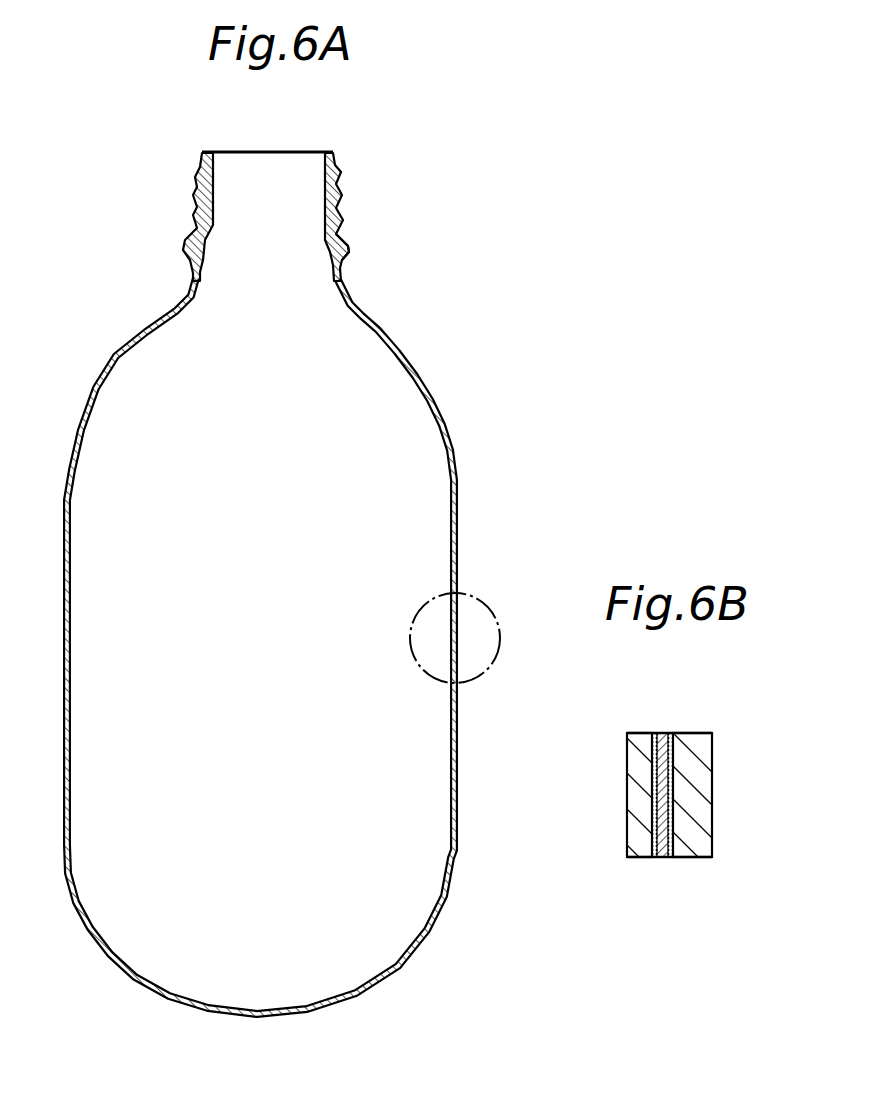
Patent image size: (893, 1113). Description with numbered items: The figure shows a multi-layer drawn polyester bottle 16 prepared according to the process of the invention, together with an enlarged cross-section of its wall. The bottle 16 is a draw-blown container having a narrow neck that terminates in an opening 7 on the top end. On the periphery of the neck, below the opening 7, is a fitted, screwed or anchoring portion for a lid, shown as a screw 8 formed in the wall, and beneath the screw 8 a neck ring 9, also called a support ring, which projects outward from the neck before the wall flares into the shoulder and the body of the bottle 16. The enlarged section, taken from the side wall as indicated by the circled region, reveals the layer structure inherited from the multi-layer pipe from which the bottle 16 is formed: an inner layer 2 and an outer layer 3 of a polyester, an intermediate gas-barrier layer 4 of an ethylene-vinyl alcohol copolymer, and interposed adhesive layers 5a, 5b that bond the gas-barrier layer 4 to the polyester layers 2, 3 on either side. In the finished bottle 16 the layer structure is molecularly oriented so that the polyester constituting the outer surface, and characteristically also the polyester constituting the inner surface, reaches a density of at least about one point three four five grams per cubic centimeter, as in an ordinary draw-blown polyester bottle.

In FIG. 6A, the multi-layer drawn polyester bottle 16 is at (468, 432).
In FIG. 6A, the opening 7 is at (331, 152).
In FIG. 6A, the screw 8 is at (341, 173).
In FIG. 6A, the neck ring 9 is at (346, 248).
In FIG. 6B, the inner layer 2 is at (637, 837).
In FIG. 6B, the outer layer 3 is at (702, 835).
In FIG. 6B, the intermediate gas-barrier layer 4 is at (662, 733).
In FIG. 6B, the adhesive layer 5a is at (655, 858).
In FIG. 6B, the adhesive layer 5b is at (670, 858).